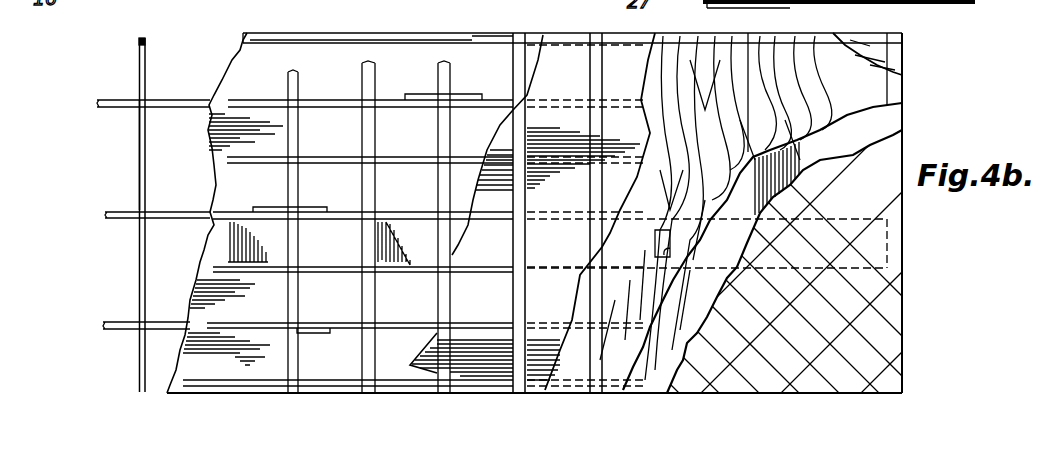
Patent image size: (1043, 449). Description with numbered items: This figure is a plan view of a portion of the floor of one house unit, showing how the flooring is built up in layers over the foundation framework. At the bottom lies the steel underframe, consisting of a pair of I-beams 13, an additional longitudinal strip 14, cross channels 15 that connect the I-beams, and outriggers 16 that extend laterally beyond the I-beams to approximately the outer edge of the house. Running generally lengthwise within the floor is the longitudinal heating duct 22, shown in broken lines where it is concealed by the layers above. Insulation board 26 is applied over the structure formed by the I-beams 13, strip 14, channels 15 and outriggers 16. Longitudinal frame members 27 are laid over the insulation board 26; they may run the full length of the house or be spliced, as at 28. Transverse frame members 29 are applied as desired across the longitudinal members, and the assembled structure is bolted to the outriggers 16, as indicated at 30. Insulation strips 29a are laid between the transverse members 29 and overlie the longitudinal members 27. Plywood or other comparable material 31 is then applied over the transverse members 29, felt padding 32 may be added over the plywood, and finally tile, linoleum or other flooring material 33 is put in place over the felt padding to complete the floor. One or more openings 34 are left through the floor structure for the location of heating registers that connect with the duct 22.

The I-beams 13 is at (103, 104).
The longitudinal strip 14 is at (127, 217).
The cross channels 15 is at (138, 176).
The outriggers 16 is at (137, 53).
The longitudinal heating duct 22 is at (405, 262).
The insulation board 26 is at (210, 187).
The longitudinal frame members 27 is at (342, 88).
The splice 28 is at (311, 211).
The transverse frame members 29 is at (520, 124).
The insulation strips 29a is at (558, 65).
The bolting location 30 is at (294, 41).
The plywood 31 is at (707, 18).
The felt padding 32 is at (887, 123).
The flooring material 33 is at (880, 343).
The openings 34 is at (663, 257).